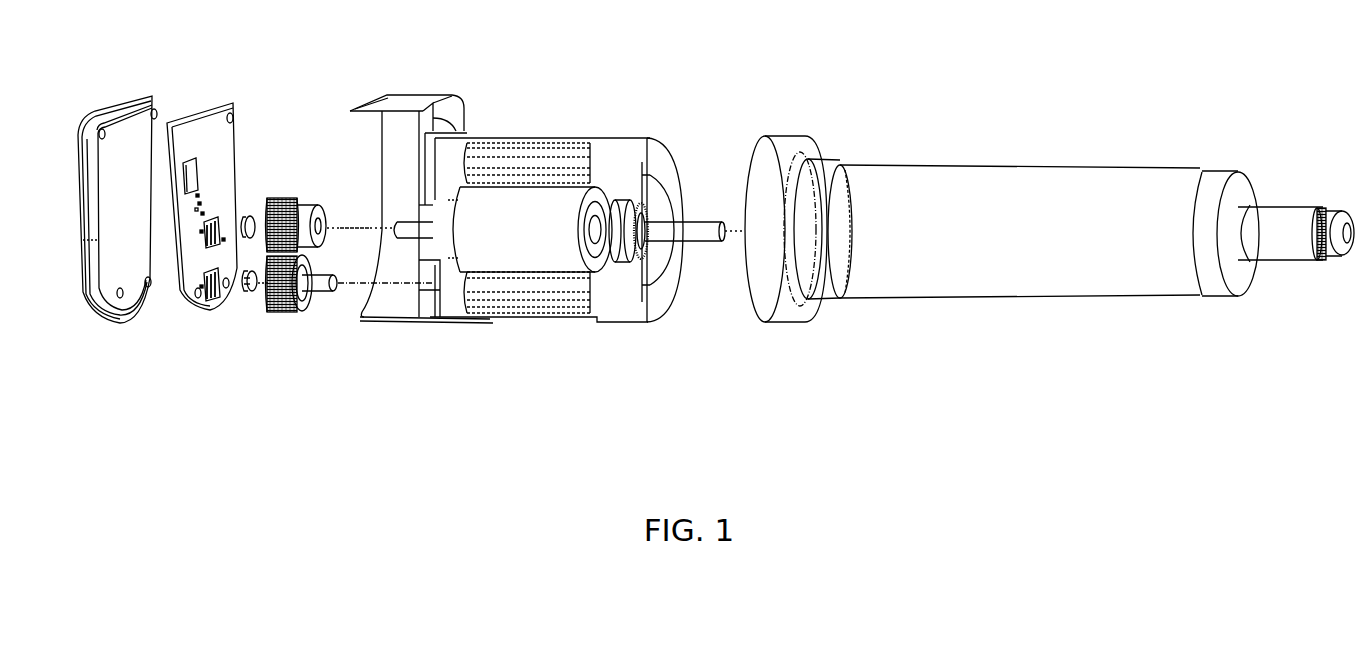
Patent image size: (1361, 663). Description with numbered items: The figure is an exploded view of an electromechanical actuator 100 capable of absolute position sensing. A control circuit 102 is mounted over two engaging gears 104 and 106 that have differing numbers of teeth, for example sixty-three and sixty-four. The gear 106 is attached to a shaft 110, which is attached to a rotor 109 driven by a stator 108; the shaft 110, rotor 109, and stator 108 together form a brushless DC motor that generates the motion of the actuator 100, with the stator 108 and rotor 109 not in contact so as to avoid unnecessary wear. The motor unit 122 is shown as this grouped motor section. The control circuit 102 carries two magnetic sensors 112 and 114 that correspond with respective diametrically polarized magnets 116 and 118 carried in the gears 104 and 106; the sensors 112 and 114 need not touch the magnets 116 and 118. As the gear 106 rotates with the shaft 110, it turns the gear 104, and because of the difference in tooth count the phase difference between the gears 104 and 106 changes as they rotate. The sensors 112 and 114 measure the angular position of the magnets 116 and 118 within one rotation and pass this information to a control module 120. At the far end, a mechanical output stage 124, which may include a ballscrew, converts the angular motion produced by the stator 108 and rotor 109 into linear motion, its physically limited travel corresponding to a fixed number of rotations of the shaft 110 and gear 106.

The electromechanical actuator 100 is at (56, 408).
The control circuit 102 is at (206, 105).
The gear 104 is at (292, 318).
The gear 106 is at (290, 196).
The stator 108 is at (553, 324).
The rotor 109 is at (516, 240).
The shaft 110 is at (410, 242).
The magnetic sensor 112 is at (213, 302).
The magnetic sensor 114 is at (213, 226).
The diametrically polarized magnet 116 is at (250, 296).
The diametrically polarized magnet 118 is at (249, 214).
The control module 120 is at (189, 154).
The motor unit 122 is at (367, 87).
The mechanical output stage 124 is at (758, 88).